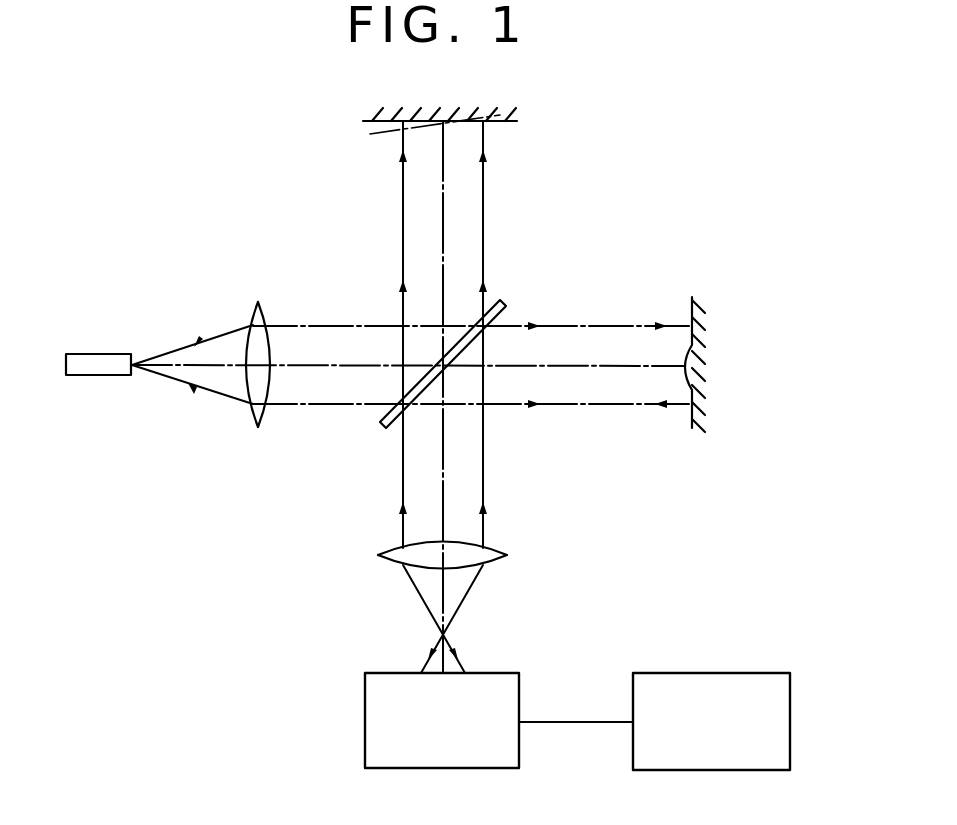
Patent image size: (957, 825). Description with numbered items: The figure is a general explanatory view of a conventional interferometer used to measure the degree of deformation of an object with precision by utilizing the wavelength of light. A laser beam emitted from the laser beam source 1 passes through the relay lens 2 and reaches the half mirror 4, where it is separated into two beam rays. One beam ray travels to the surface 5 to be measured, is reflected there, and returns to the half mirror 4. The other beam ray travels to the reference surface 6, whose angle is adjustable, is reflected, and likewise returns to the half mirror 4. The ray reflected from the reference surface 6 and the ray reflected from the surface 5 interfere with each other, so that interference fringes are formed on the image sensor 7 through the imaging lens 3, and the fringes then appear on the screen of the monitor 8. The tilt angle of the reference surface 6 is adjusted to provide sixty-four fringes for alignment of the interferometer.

The source of laser beam 1 is at (118, 352).
The relay lens 2 is at (262, 312).
The imaging lens 3 is at (496, 551).
The half mirror 4 is at (507, 302).
The surface to be measured 5 is at (696, 302).
The reference surface with an adjustable angle 6 is at (497, 127).
The image sensor 7 is at (500, 673).
The monitor 8 is at (757, 673).